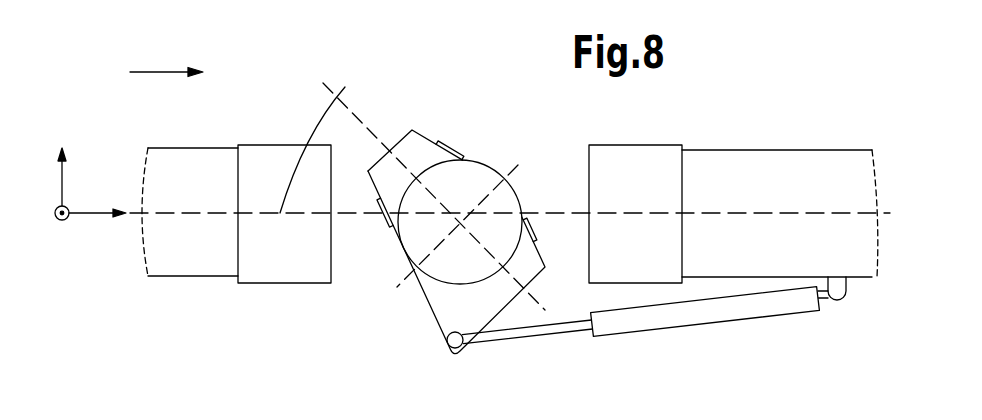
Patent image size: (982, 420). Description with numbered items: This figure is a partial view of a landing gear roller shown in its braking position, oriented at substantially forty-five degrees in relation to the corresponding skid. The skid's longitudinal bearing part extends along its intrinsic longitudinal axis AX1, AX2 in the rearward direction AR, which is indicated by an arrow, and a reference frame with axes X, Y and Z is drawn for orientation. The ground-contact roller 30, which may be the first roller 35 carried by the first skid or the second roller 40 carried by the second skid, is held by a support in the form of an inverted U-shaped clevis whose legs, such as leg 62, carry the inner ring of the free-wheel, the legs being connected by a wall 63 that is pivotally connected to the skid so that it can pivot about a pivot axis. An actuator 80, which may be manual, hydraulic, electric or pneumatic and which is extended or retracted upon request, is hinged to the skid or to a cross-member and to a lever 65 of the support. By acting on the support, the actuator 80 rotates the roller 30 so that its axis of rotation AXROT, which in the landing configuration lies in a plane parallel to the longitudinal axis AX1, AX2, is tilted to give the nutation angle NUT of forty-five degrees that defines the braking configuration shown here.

The ground-contact roller 30 is at (436, 109).
The first roller 35 is at (436, 109).
The second roller 40 is at (452, 147).
The leg 62 is at (385, 180).
The wall 63 is at (477, 170).
The lever 65 is at (450, 310).
The actuator 80 is at (742, 308).
The rearward direction AR is at (162, 72).
The axis of rotation AXROT is at (341, 98).
The nutation angle NUT is at (316, 119).
The longitudinal axis AX1 is at (510, 179).
The longitudinal axis AX2 is at (827, 213).
The X axis X is at (97, 196).
The Y axis Y is at (73, 173).
The Z axis Z is at (61, 231).